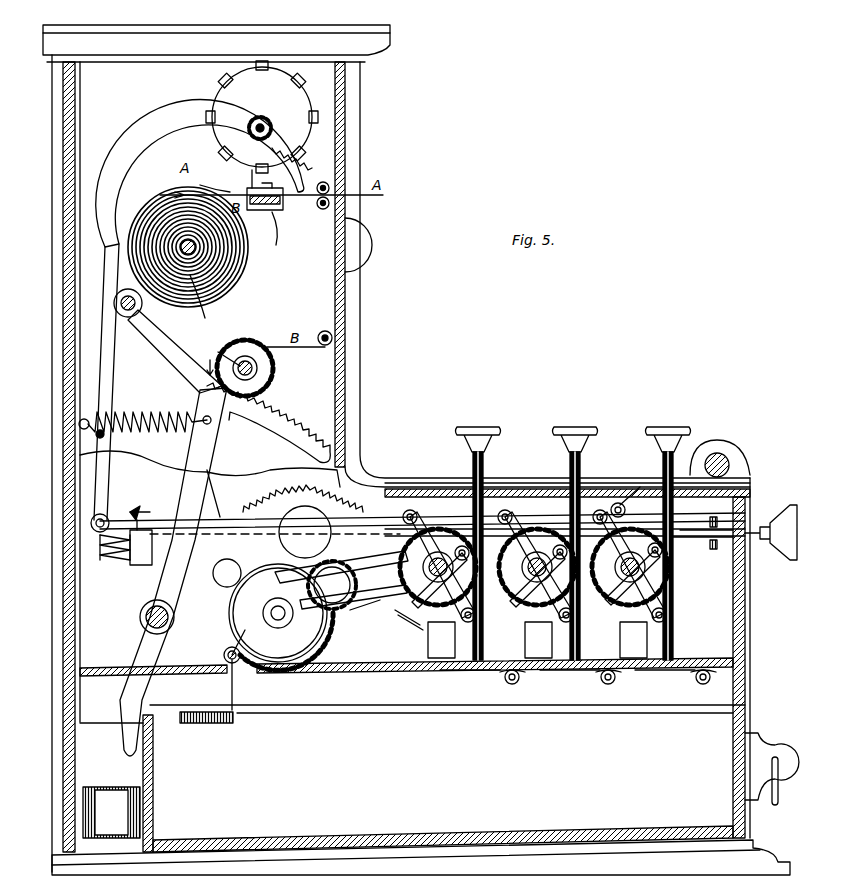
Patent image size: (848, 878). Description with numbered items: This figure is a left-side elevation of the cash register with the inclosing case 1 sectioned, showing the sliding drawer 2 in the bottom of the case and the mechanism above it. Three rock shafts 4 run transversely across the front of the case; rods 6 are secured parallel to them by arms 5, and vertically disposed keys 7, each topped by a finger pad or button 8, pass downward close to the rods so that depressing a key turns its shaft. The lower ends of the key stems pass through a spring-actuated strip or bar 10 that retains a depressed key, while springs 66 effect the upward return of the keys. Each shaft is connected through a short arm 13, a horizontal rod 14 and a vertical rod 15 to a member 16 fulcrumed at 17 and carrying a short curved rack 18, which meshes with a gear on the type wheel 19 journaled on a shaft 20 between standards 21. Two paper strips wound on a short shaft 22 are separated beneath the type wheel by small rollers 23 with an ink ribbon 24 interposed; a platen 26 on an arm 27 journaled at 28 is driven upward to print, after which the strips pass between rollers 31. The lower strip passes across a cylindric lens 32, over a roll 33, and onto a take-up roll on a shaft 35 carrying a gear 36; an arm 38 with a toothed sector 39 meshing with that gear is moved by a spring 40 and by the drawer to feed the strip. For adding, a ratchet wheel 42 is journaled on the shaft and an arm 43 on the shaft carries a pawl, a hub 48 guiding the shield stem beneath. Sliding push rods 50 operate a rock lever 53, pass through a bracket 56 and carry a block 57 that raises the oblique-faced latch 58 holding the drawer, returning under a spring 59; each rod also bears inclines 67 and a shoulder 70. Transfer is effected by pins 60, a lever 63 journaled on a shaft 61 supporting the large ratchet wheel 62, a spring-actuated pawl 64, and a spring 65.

The inclosing case 1 is at (85, 766).
The sliding drawer 2 is at (447, 742).
The rock shafts 4 is at (534, 575).
The arms 5 is at (538, 565).
The rods 6 is at (537, 568).
The keys 7 is at (581, 556).
The finger pad or button 8 is at (573, 431).
The strip or bar 10 is at (567, 680).
The short arm 13 is at (353, 680).
The horizontal rod 14 is at (243, 514).
The vertical rod 15 is at (112, 478).
The member 16 is at (112, 210).
The fulcrum 17 is at (173, 533).
The short curved rack 18 is at (292, 156).
The type wheel 19 is at (262, 117).
The shaft 20 is at (272, 125).
The standards 21 is at (416, 450).
The short shaft 22 is at (235, 255).
The small rollers 23 is at (271, 195).
The ink ribbon 24 is at (268, 198).
The platen 26 is at (274, 233).
The arm 27 is at (208, 302).
The journal 28 is at (114, 310).
The rollers 31 is at (319, 199).
The cylindric lens 32 is at (358, 245).
The roll 33 is at (299, 329).
The shaft 35 is at (217, 360).
The gear 36 is at (276, 368).
The arm 38 is at (422, 528).
The toothed sector 39 is at (280, 425).
The spring 40 is at (145, 415).
The ratchet wheel 42 is at (477, 610).
The arm 43 is at (521, 498).
The hub 48 is at (523, 640).
The sliding push rods 50 is at (298, 540).
The rock lever 53 is at (210, 484).
The bracket 56 is at (171, 620).
The block 57 is at (152, 556).
The oblique-faced latch 58 is at (133, 550).
The spring 59 is at (118, 560).
The pins 60 is at (442, 542).
The shaft 61 is at (280, 575).
The large ratchet wheel 62 is at (345, 643).
The lever 63 is at (367, 594).
The spring-actuated pawl 64 is at (311, 664).
The spring 65 is at (455, 624).
The springs 66 is at (602, 683).
The inclines 67 is at (713, 549).
The shoulder 70 is at (703, 544).